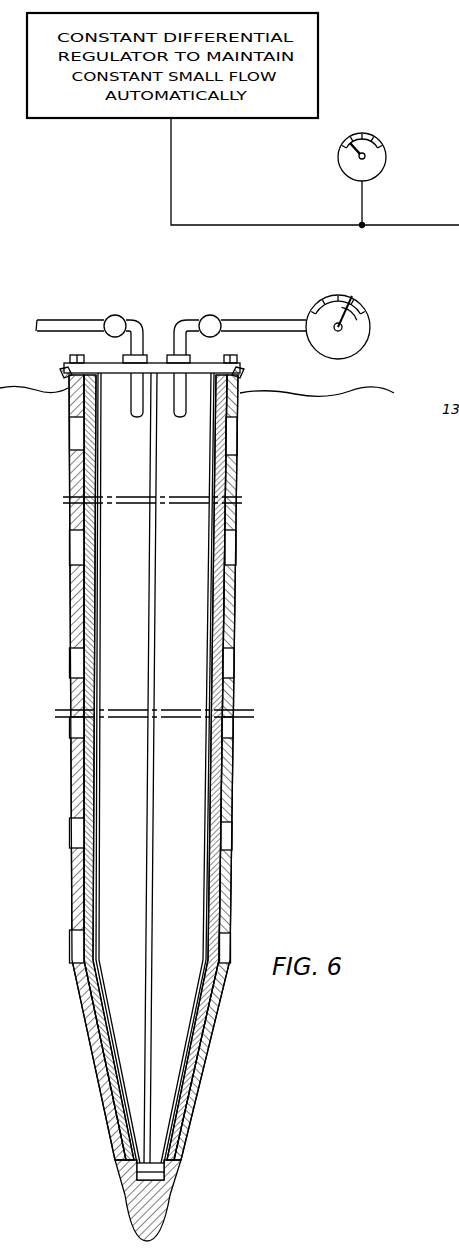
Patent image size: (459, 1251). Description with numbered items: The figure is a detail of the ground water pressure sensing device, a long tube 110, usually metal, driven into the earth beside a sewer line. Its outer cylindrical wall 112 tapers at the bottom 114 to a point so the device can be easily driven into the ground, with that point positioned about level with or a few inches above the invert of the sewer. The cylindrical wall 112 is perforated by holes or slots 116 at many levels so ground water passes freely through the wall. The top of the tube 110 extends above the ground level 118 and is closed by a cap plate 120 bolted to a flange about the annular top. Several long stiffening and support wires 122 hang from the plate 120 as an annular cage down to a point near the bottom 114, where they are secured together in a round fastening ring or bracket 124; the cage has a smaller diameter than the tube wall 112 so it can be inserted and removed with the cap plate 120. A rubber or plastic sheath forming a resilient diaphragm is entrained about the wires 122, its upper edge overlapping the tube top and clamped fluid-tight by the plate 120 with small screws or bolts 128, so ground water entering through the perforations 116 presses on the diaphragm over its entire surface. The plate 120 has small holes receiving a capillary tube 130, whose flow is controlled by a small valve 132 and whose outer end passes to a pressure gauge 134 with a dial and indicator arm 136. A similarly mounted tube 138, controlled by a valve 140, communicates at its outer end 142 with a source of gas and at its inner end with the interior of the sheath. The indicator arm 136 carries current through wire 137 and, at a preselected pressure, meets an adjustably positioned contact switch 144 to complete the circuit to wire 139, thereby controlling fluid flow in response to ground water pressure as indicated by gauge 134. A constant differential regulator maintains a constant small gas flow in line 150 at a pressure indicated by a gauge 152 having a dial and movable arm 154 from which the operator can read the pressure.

The tube 110 is at (236, 486).
The outer cylindrical wall 112 is at (236, 584).
The bottom 114 is at (178, 1160).
The holes or slots 116 is at (230, 728).
The ground level 118 is at (340, 393).
The cap plate 120 is at (241, 366).
The stiffening and support wires 122 is at (207, 453).
The fastening ring or bracket 124 is at (156, 1170).
The screws or bolts 128 is at (78, 355).
The capillary tube 130 is at (248, 318).
The valve 132 is at (208, 315).
The pressure gauge 134 is at (372, 329).
The indicator arm 136 is at (352, 296).
The wire 137 is at (364, 338).
The tube 138 is at (128, 318).
The wire 139 is at (366, 300).
The valve 140 is at (112, 315).
The outer end 142 is at (64, 318).
The contact switch 144 is at (368, 313).
The line 150 is at (175, 165).
The gauge 152 is at (393, 150).
The movable arm 154 is at (348, 147).